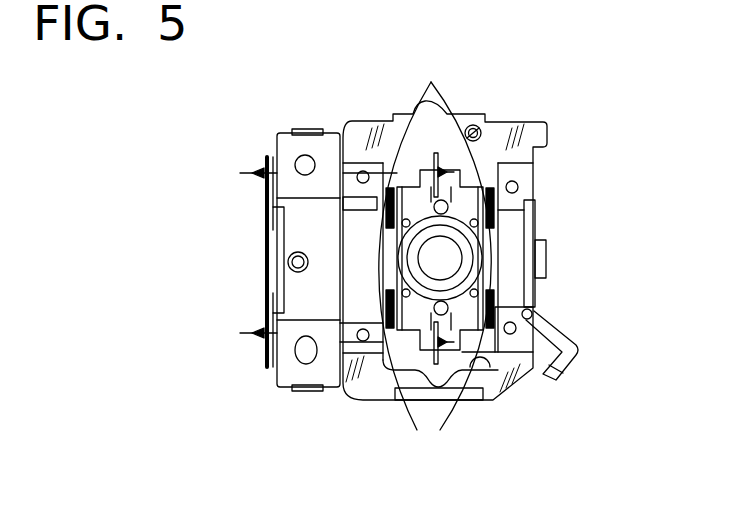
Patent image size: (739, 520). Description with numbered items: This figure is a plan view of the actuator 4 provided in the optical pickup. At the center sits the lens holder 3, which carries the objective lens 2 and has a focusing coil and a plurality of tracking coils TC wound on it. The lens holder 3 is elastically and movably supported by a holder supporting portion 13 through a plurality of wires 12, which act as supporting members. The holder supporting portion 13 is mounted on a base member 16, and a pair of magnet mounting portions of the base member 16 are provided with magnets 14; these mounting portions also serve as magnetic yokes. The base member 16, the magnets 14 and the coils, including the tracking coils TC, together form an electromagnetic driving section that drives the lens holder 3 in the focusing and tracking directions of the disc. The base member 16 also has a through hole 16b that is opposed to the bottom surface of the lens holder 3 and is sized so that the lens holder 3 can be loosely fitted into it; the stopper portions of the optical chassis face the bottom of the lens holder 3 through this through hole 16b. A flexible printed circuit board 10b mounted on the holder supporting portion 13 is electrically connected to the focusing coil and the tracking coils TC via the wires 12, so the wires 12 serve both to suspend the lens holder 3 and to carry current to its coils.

The actuator 4 is at (537, 95).
The base member 16 is at (547, 135).
The through hole 16b is at (480, 395).
The magnets 14 is at (360, 222).
The wires 12 is at (345, 138).
The lens holder 3 is at (463, 203).
The objective lens 2 is at (443, 258).
The holder supporting portion 13 is at (305, 286).
The flexible printed circuit board 10b is at (265, 318).
The tracking coils TC is at (431, 84).